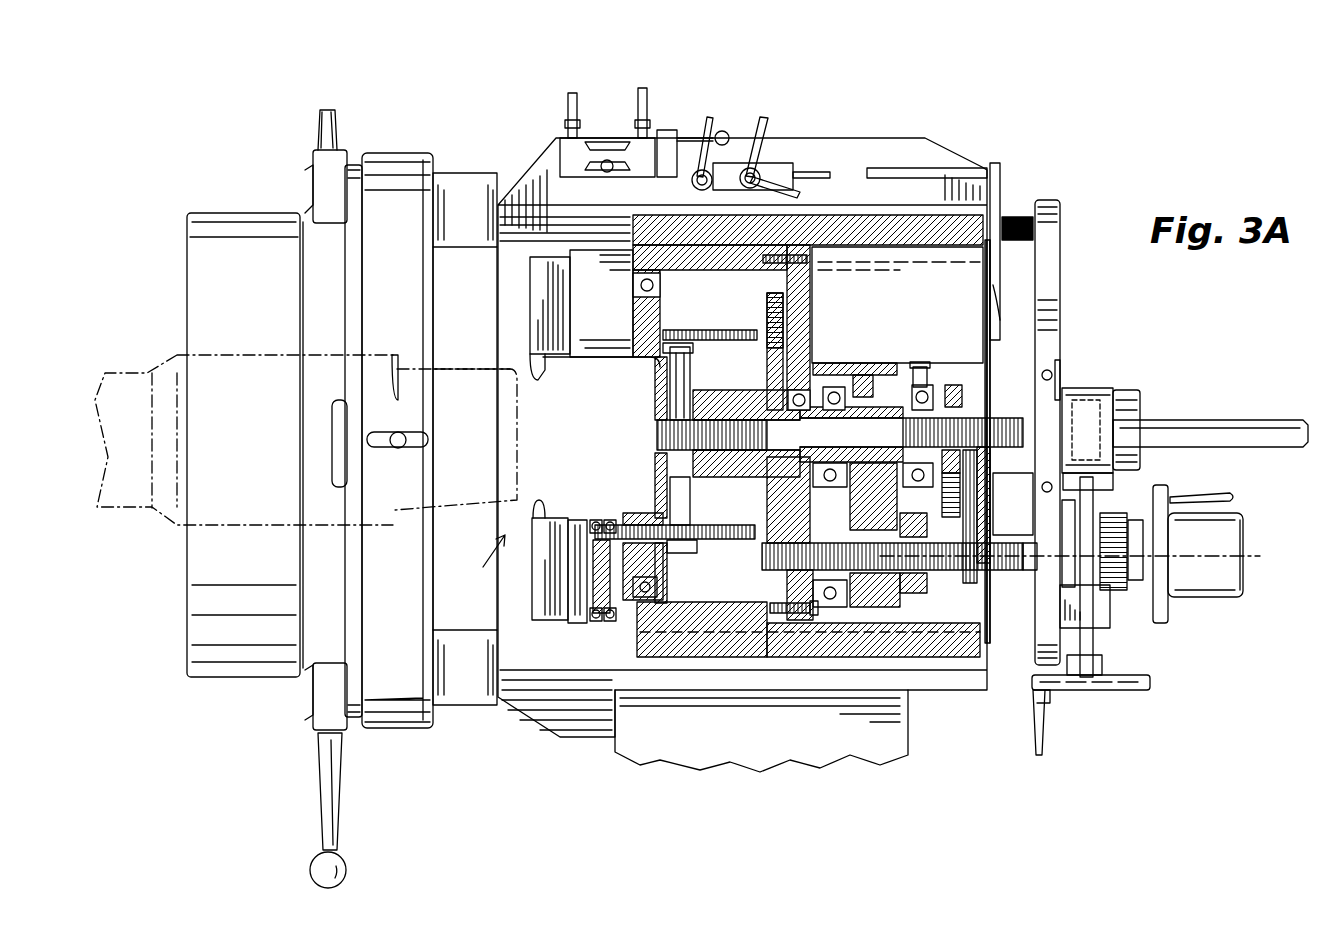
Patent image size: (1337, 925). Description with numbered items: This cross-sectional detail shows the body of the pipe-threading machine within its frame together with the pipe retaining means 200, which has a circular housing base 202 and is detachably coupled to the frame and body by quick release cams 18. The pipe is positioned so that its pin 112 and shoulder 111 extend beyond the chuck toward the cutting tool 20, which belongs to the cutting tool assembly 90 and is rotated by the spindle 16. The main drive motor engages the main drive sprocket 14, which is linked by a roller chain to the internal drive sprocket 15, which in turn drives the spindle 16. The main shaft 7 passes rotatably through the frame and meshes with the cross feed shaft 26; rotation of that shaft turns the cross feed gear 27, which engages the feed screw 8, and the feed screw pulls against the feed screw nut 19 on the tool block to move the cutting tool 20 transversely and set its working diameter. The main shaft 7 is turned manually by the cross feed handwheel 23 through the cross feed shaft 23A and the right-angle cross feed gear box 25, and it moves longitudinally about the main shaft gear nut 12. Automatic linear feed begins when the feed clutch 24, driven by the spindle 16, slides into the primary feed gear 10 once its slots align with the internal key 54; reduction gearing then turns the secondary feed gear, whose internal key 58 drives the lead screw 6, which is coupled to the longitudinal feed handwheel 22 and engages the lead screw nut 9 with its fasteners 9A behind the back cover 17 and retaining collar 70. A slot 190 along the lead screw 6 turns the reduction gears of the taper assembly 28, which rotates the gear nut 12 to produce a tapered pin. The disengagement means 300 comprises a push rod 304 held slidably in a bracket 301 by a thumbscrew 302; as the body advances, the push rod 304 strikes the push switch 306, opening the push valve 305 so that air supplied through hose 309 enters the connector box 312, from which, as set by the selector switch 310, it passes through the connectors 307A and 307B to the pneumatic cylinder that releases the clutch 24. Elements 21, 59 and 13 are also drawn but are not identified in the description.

The disengagement means 300 is at (883, 74).
The pipe retaining means 200 is at (236, 701).
The circular housing base 202 is at (403, 730).
The quick release cams 18 is at (330, 820).
The shoulder 111 is at (398, 357).
The pipe pin 112 is at (520, 467).
The cutting tool assembly 90 is at (484, 562).
The cutting tool 20 is at (537, 360).
The feed screw nut 19 is at (590, 605).
The main drive sprocket 14 is at (767, 305).
The spindle 16 is at (693, 388).
The cross feed shaft 26 is at (680, 480).
The feed screw 8 is at (603, 613).
The cross feed gear 27 is at (720, 540).
The gear chamber 21 is at (813, 273).
The internal drive sprocket 15 is at (807, 357).
The feed clutch 24 is at (883, 370).
The internal key 54 is at (925, 367).
The primary feed gear 10 is at (853, 373).
The internal key 58 is at (887, 373).
The lead screw nut 9 is at (860, 623).
The fasteners 9A is at (907, 613).
The feed gear 59 is at (993, 533).
The end plate 13 is at (997, 285).
The main shaft gear nut 12 is at (1000, 303).
The back cover 17 is at (993, 357).
The main shaft 7 is at (1058, 383).
The cross feed gear box 25 is at (1113, 385).
The taper assembly 28 is at (1140, 388).
The slot 190 is at (1030, 537).
The longitudinal feed handwheel 22 is at (1173, 617).
The retaining collar 70 is at (1113, 627).
The cross feed shaft 23A is at (1097, 645).
The cross feed handwheel 23 is at (1150, 688).
The lead screw 6 is at (1030, 590).
The bracket 301 is at (988, 163).
The thumbscrew 302 is at (1000, 173).
The push rod 304 is at (943, 168).
The push valve 305 is at (778, 160).
The push switch 306 is at (815, 180).
The hose 309 is at (762, 118).
The selector switch 310 is at (725, 133).
The connector box 312 is at (605, 138).
The connector 307A is at (643, 92).
The connector 307B is at (572, 103).